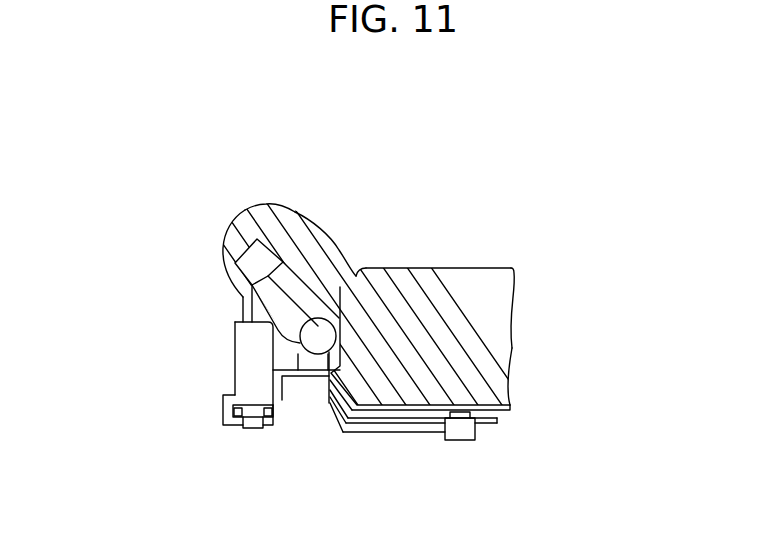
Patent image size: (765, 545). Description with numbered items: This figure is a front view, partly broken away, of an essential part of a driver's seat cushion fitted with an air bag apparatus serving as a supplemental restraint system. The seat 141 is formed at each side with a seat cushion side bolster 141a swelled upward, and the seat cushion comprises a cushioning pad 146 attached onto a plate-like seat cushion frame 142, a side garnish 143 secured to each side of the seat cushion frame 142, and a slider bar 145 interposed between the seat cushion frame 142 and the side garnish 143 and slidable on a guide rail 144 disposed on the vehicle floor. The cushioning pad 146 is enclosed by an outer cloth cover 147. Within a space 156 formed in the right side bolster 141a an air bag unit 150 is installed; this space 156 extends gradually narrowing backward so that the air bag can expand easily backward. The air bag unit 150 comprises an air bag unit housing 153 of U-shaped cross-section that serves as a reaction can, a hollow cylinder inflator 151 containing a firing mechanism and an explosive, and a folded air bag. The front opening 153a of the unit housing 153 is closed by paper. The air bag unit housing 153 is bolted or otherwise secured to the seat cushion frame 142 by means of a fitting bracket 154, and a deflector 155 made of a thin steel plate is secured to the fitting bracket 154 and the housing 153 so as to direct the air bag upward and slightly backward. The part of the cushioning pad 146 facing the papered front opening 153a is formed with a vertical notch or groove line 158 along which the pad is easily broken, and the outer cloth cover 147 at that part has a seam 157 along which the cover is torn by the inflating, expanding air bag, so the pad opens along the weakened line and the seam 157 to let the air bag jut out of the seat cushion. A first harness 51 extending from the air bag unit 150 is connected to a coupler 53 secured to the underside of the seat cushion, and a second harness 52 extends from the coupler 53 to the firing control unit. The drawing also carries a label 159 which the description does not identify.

The seat 141 is at (339, 309).
The seat cushion side bolster 141a is at (258, 217).
The seat cushion frame 142 is at (510, 410).
The side garnish 143 is at (263, 350).
The guide rail 144 is at (237, 420).
The slider bar 145 is at (228, 390).
The cushioning pad 146 is at (503, 347).
The outer cloth cover 147 is at (503, 268).
The air bag unit 150 is at (287, 452).
The inflator 151 is at (387, 260).
The air bag unit housing 153 is at (297, 285).
The front opening 153a is at (240, 270).
The fitting bracket 154 is at (287, 380).
The deflector 155 is at (243, 290).
The space 156 is at (333, 392).
The seam 157 is at (270, 205).
The vertical groove line 158 is at (227, 232).
The right dome wall 159 is at (325, 222).
The first harness 51 is at (390, 433).
The second harness 52 is at (482, 433).
The coupler 53 is at (457, 440).